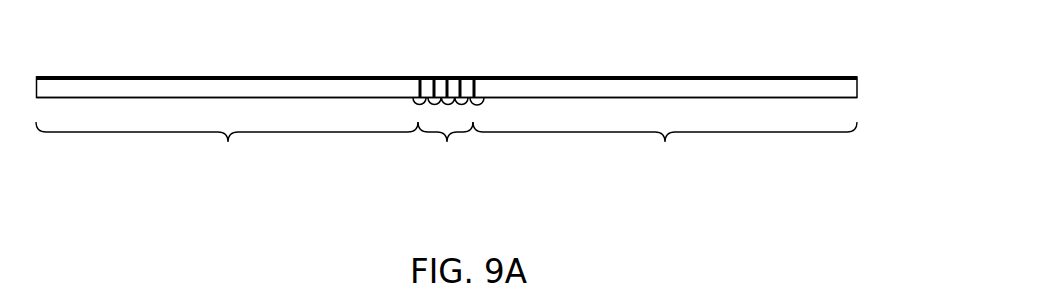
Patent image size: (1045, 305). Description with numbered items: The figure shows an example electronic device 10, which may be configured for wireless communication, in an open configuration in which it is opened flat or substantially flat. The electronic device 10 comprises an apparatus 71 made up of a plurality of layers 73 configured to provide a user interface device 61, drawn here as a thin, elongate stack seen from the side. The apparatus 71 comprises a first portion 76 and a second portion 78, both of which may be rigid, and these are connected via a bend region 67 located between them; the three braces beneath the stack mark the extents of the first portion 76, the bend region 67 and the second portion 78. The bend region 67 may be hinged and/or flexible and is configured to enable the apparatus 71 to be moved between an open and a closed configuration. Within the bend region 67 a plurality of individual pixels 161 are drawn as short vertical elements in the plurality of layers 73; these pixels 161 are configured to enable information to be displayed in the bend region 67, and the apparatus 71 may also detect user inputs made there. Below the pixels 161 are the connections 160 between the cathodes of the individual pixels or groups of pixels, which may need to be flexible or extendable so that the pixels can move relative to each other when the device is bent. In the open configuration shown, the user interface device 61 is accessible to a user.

The electronic device 10 is at (857, 88).
The user interface device 61 is at (113, 73).
The apparatus 71 is at (818, 73).
The individual pixels 161 is at (449, 88).
The connections 160 is at (487, 112).
The plurality of layers 73 is at (363, 92).
The first portion 76 is at (227, 149).
The bend region 67 is at (445, 149).
The second portion 78 is at (665, 149).